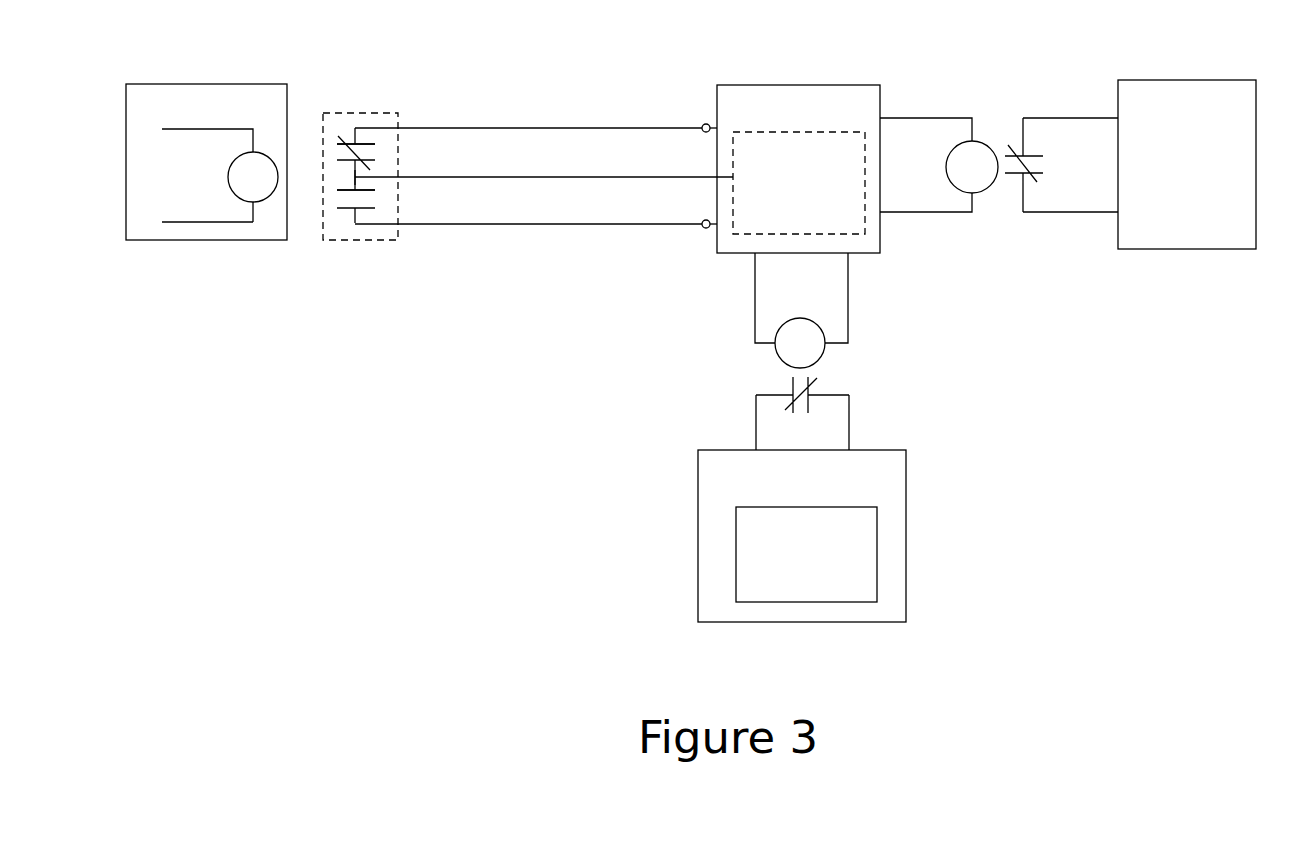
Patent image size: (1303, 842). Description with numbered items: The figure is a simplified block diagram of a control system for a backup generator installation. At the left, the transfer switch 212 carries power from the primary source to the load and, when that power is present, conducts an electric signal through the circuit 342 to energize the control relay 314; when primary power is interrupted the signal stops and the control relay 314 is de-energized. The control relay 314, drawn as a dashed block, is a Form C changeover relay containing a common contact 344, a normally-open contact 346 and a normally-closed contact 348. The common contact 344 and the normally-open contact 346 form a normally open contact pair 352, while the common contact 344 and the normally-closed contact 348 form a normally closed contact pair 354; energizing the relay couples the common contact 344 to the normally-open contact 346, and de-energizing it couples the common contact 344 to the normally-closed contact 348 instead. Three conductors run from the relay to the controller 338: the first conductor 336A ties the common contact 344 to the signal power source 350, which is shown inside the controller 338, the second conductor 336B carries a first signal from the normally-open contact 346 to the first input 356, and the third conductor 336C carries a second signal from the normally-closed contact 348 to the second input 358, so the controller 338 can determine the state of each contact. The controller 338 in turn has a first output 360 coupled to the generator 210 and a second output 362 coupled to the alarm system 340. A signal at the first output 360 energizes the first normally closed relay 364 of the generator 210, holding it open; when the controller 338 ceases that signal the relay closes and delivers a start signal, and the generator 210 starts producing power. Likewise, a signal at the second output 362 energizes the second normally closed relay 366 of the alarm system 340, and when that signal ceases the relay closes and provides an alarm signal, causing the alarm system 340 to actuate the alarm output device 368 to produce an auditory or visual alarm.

The generator 210 is at (1217, 80).
The transfer switch 212 is at (250, 83).
The control relay 314 is at (390, 110).
The first conductor 336A is at (543, 176).
The second conductor 336B is at (543, 223).
The third conductor 336C is at (543, 127).
The controller 338 is at (840, 85).
The alarm system 340 is at (862, 450).
The circuit 342 is at (215, 222).
The common contact 344 is at (353, 178).
The normally-open contact 346 is at (356, 224).
The normally-closed contact 348 is at (355, 128).
The signal power source 350 is at (865, 232).
The normally open contact pair 352 is at (388, 200).
The normally closed contact pair 354 is at (385, 152).
The first input 356 is at (706, 220).
The second input 358 is at (706, 124).
The first output 360 is at (942, 118).
The second output 362 is at (754, 332).
The first normally closed relay 364 is at (1004, 186).
The second normally closed relay 366 is at (838, 385).
The alarm output device 368 is at (806, 554).